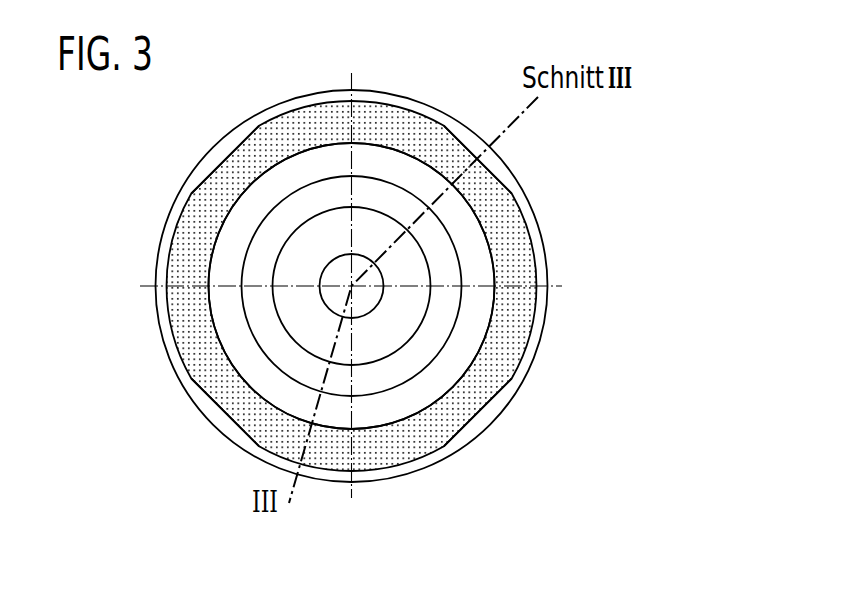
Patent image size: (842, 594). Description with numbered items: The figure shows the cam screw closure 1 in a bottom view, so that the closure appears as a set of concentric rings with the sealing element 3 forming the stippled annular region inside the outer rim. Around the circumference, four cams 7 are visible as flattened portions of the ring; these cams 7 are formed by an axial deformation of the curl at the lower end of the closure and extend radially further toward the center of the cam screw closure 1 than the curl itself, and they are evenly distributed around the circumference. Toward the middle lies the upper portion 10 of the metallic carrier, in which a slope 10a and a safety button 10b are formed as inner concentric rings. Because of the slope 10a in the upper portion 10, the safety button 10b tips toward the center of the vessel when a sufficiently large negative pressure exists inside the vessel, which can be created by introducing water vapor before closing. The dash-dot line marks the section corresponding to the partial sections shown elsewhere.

The cam screw closure 1 is at (540, 160).
The sealing element 3 is at (517, 248).
The cams 7 is at (221, 156).
The upper portion of carrier 10 is at (478, 224).
The slope 10a is at (443, 297).
The safety button 10b is at (410, 318).